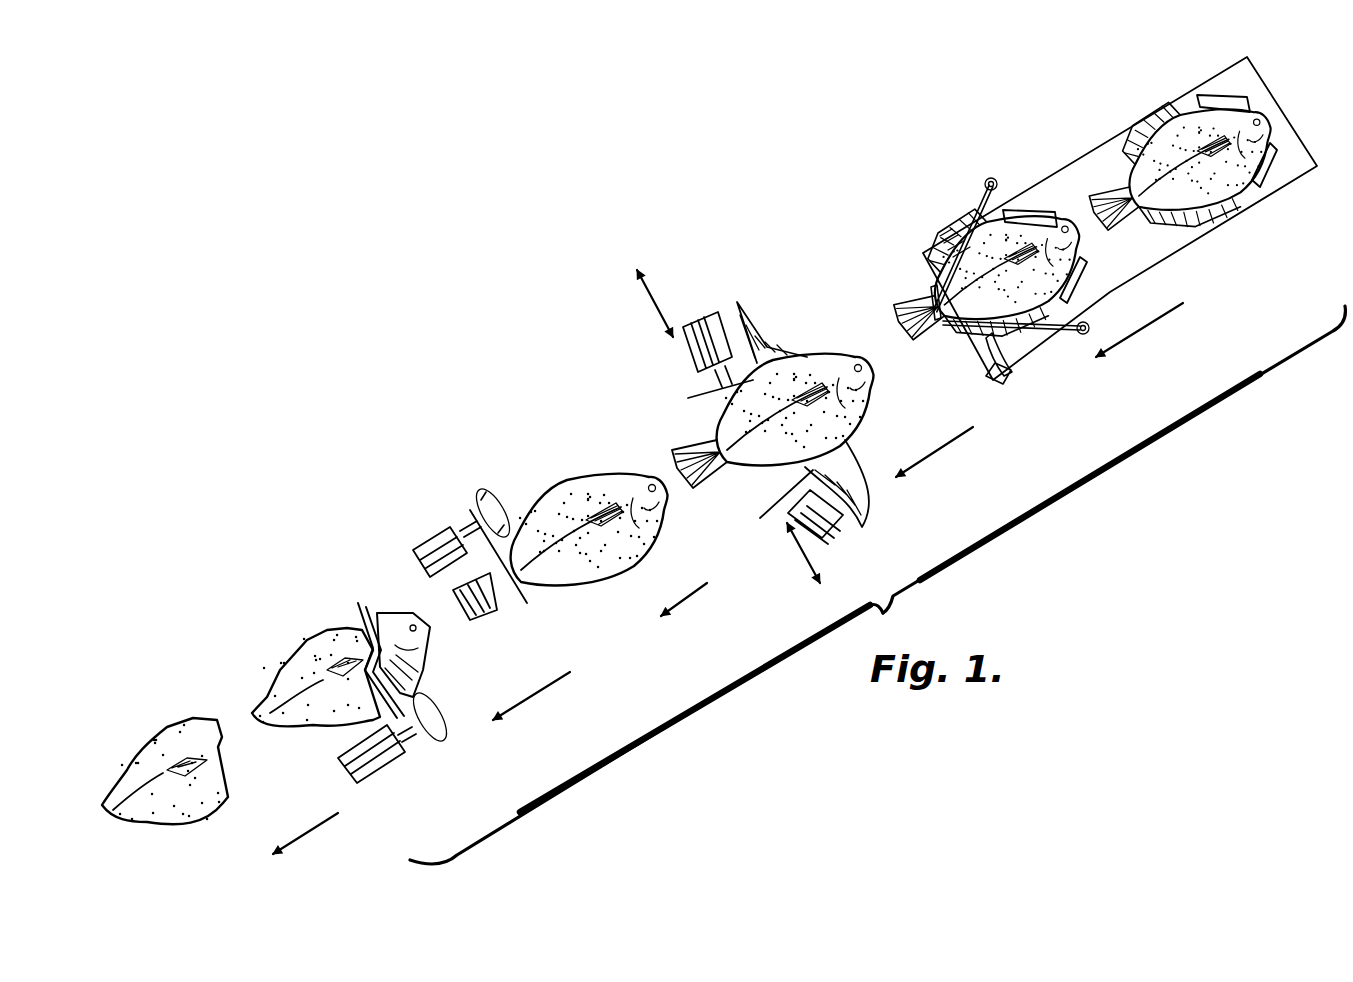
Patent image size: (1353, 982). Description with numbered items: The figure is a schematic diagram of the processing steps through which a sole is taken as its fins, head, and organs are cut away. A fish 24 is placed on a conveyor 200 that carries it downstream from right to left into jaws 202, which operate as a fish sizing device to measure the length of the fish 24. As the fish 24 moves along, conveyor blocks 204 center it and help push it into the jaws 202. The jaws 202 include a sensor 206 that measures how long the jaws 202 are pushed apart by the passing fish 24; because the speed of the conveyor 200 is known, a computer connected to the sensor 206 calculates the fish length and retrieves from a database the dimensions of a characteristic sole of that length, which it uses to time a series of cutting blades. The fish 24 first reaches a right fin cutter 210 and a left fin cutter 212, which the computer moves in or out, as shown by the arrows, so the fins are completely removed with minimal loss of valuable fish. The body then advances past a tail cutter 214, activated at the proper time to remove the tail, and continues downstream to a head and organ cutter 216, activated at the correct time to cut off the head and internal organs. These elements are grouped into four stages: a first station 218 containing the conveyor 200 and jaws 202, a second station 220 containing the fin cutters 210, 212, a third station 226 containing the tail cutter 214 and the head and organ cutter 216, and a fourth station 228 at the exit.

The fish 24 is at (1200, 200).
The conveyor 200 is at (1112, 135).
The jaws 202 is at (902, 292).
The conveyor blocks 204 is at (1262, 180).
The sensor 206 is at (1013, 392).
The right fin cutter 210 is at (834, 530).
The left fin cutter 212 is at (697, 316).
The tail cutter 214 is at (447, 527).
The head and organ cutter 216 is at (392, 770).
The first station 218 is at (1006, 108).
The second station 220 is at (569, 233).
The third station 226 is at (308, 451).
The fourth station 228 is at (102, 667).